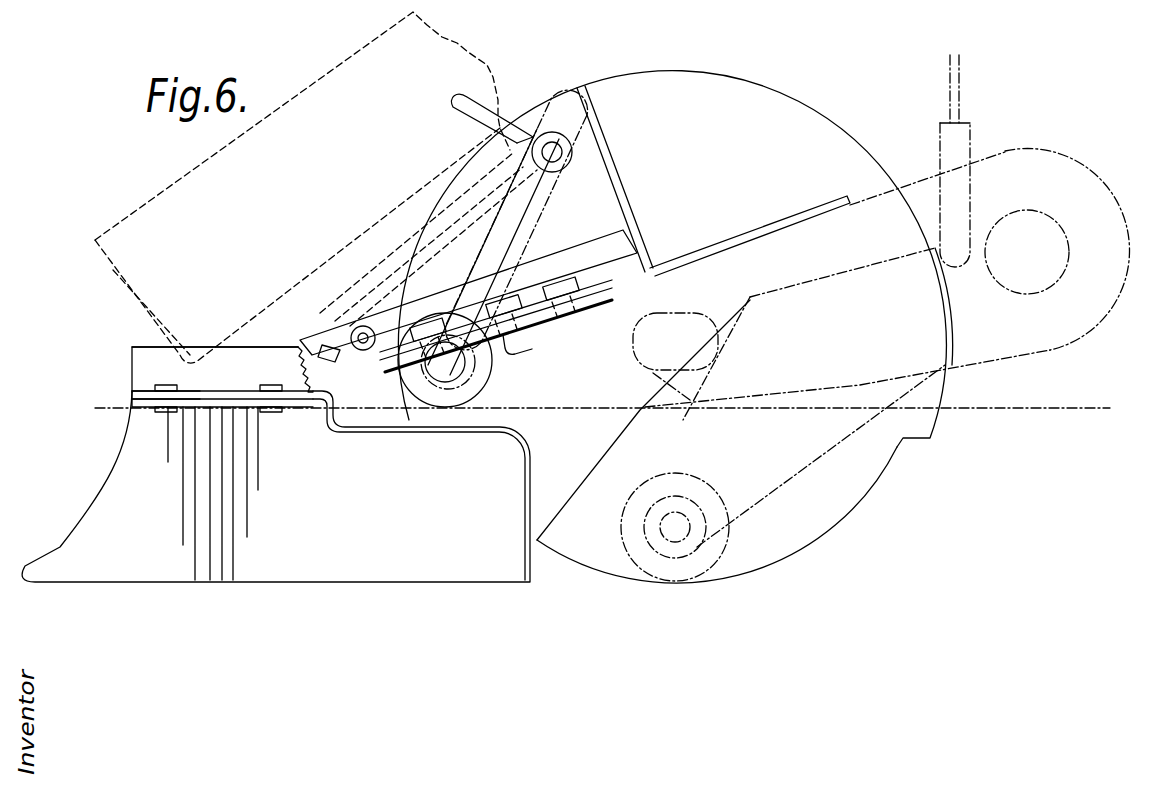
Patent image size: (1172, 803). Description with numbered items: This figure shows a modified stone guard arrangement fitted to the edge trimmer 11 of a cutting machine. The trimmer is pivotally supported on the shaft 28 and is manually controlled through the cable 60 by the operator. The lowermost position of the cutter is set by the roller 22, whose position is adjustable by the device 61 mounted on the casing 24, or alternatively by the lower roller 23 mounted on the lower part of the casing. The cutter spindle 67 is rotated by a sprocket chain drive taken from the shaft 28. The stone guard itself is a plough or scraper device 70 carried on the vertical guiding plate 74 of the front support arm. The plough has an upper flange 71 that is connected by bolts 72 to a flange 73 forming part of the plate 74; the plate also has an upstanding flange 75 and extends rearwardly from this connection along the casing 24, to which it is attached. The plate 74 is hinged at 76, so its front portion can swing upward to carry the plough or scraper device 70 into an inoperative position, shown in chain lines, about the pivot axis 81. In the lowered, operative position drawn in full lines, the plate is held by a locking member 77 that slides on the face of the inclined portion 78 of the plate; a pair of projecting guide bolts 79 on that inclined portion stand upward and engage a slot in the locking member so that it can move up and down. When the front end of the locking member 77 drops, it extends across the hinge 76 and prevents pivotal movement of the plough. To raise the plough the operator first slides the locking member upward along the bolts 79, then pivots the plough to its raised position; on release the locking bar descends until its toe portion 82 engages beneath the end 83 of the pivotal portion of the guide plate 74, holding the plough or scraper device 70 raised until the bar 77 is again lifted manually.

The edge trimmer 11 is at (903, 120).
The roller 22 is at (490, 395).
The lower roller 23 is at (723, 540).
The casing 24 is at (827, 137).
The shaft 28 is at (1033, 220).
The cable 60 is at (958, 102).
The device 61 is at (516, 117).
The cutter spindle 67 is at (712, 342).
The plough or scraper device 70 is at (172, 185).
The upper flange 71 is at (190, 403).
The bolts 72 is at (160, 385).
The flange 73 is at (200, 395).
The vertical guiding plate 74 is at (128, 392).
The upstanding flange 75 is at (225, 358).
The hinge 76 is at (430, 382).
The locking member 77 is at (392, 385).
The inclined portion 78 is at (477, 347).
The projecting guide bolts 79 is at (580, 323).
The pivot axis 81 is at (350, 323).
The toe portion 82 is at (350, 380).
The end of the pivotal portion of the guide plate 83 is at (315, 360).